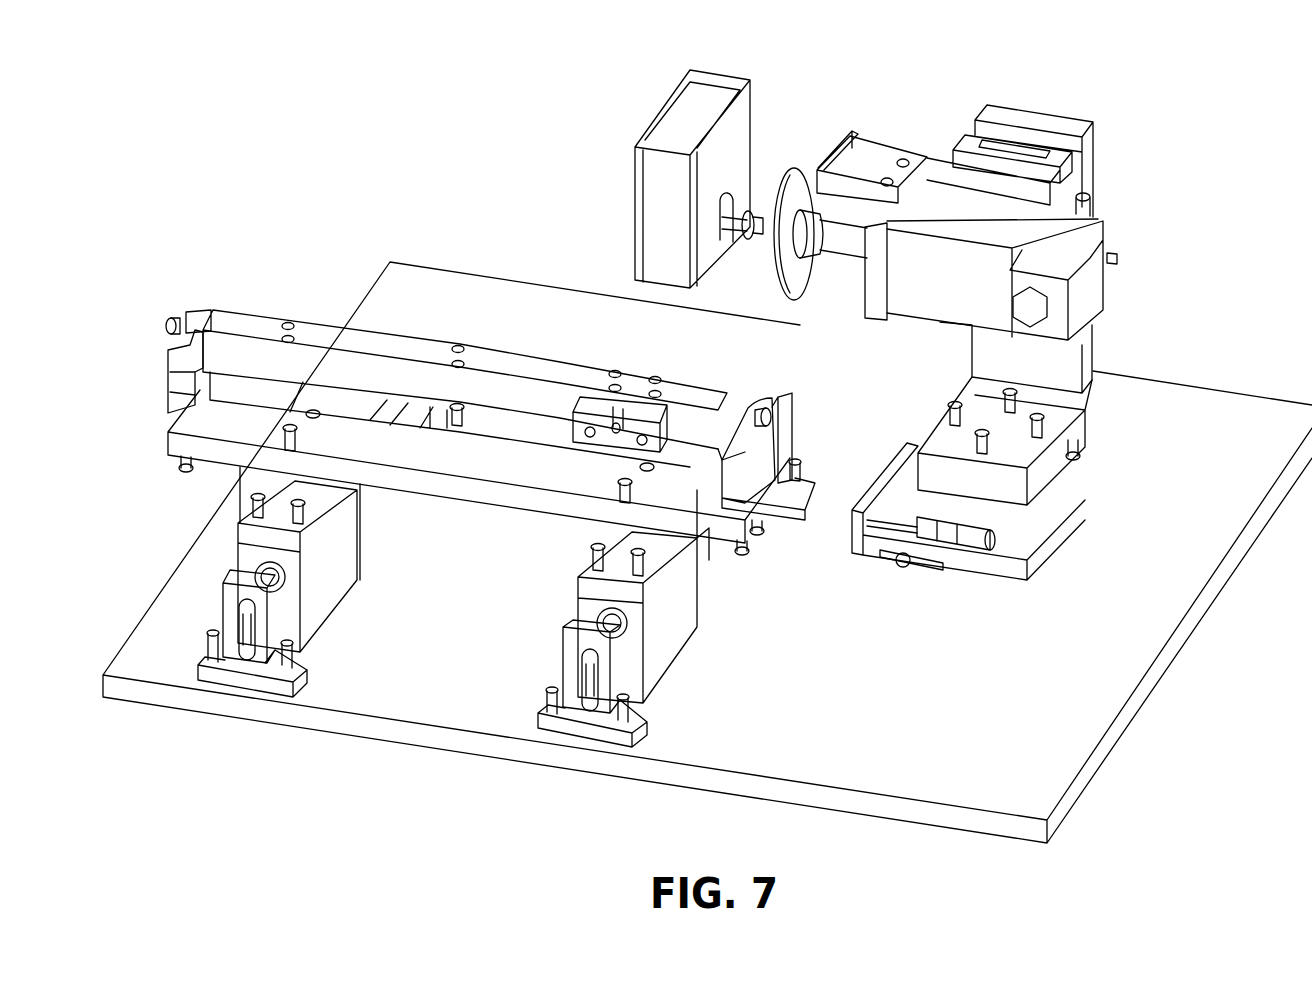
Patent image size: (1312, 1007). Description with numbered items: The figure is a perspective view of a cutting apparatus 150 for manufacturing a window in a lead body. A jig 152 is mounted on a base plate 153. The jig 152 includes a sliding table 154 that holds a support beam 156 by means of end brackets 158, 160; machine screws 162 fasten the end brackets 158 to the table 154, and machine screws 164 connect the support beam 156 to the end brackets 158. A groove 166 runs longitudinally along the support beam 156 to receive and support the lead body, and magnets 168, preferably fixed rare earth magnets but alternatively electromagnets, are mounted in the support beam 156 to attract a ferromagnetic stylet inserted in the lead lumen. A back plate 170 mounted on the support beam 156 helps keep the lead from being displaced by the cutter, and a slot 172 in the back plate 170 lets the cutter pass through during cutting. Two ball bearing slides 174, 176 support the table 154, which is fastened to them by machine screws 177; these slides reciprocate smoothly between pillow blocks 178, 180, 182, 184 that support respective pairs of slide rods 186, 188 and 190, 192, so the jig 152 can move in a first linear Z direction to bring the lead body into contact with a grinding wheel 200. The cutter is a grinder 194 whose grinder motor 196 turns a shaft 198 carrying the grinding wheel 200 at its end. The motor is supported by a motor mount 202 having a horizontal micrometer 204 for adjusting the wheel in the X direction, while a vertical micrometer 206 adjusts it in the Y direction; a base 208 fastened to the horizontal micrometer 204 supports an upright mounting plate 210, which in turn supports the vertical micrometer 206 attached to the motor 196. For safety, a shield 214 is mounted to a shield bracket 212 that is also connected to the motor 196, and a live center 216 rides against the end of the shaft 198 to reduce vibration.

The cutting apparatus 150 is at (358, 170).
The jig 152 is at (254, 292).
The base plate 153 is at (1078, 742).
The sliding table 154 is at (477, 482).
The support beam 156 is at (400, 322).
The end bracket 158 is at (168, 400).
The end bracket 160 is at (760, 440).
The machine screws 162 is at (185, 472).
The machine screws 164 is at (165, 330).
The groove 166 is at (328, 345).
The magnets 168 is at (288, 322).
The back plate 170 is at (607, 440).
The slot 172 is at (663, 405).
The ball bearing slide 174 is at (342, 587).
The ball bearing slide 176 is at (680, 643).
The machine screws 177 is at (283, 430).
The pillow block 178 is at (245, 690).
The pillow block 180 is at (458, 400).
The pillow block 182 is at (642, 723).
The pillow block 184 is at (792, 407).
The slide rod 186 is at (268, 572).
The slide rod 188 is at (370, 500).
The slide rod 190 is at (607, 620).
The slide rod 192 is at (707, 558).
The grinder 194 is at (1143, 243).
The grinder motor 196 is at (1090, 275).
The shaft 198 is at (845, 250).
The grinding wheel 200 is at (777, 278).
The motor mount 202 is at (1045, 415).
The horizontal micrometer 204 is at (993, 543).
The vertical micrometer 206 is at (1092, 197).
The base 208 is at (1040, 472).
The upright mounting plate 210 is at (1087, 347).
The shield bracket 212 is at (872, 148).
The shield 214 is at (720, 72).
The live center 216 is at (752, 210).